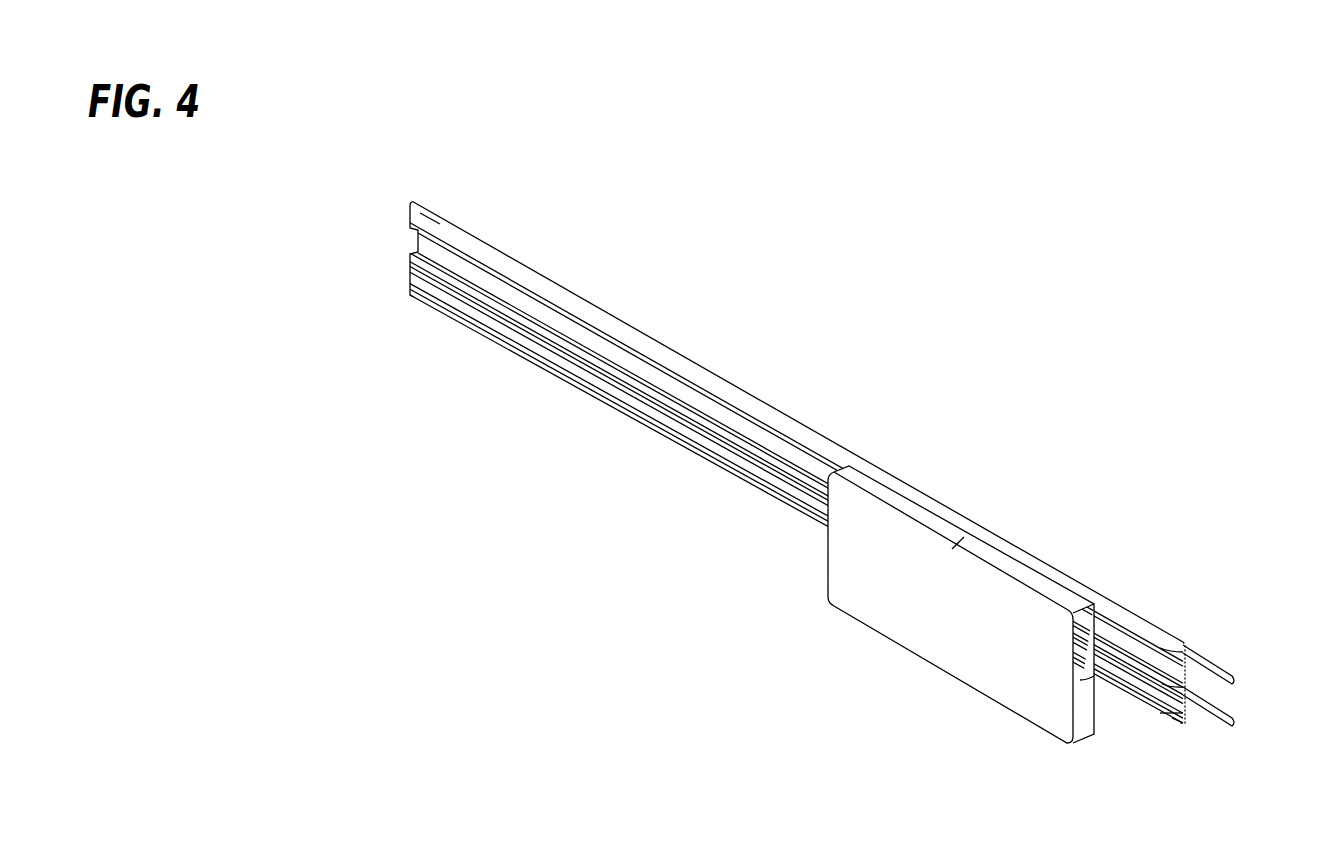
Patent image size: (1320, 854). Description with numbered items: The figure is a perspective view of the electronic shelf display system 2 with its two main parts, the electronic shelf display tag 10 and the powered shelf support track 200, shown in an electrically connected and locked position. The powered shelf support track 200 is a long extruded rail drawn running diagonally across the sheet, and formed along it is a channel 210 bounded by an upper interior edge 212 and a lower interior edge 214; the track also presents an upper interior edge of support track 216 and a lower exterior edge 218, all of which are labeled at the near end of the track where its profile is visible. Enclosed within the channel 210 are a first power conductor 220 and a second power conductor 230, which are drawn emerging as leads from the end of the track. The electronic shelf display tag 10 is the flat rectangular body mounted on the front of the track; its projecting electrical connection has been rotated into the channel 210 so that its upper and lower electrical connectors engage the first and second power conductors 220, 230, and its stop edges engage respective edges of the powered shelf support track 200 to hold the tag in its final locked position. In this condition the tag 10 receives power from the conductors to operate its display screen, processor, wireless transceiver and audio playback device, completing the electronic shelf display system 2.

The electronic shelf display system 2 is at (300, 347).
The electronic shelf display tag 10 is at (961, 604).
The powered shelf support track 200 is at (647, 420).
The channel 210 is at (430, 243).
The upper interior edge 212 is at (1160, 658).
The lower interior edge 214 is at (1170, 682).
The upper interior edge of support track 216 is at (1172, 717).
The lower exterior edge 218 is at (1160, 720).
The first power conductor 220 is at (1233, 686).
The second power conductor 230 is at (1235, 727).